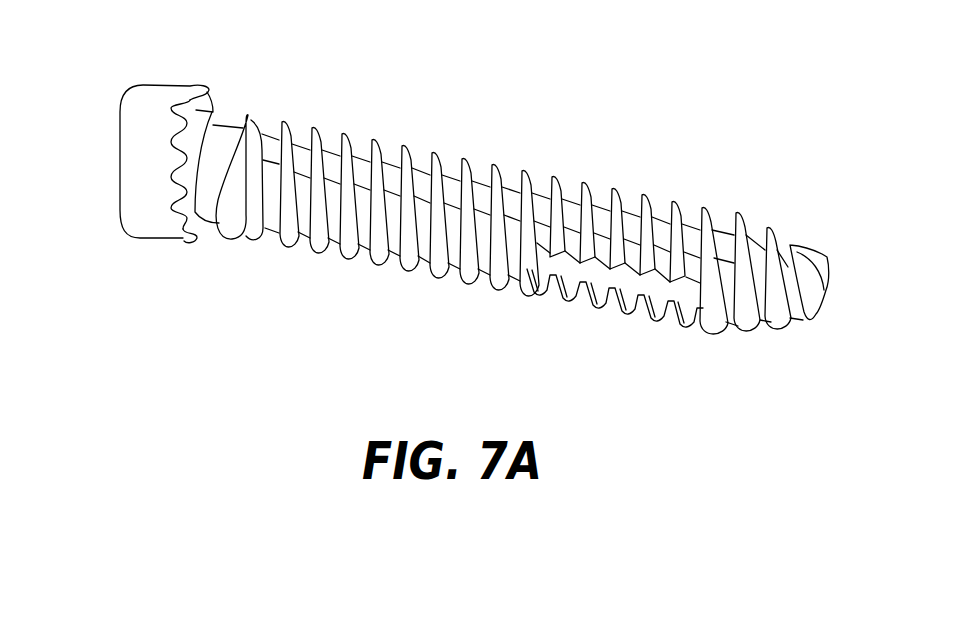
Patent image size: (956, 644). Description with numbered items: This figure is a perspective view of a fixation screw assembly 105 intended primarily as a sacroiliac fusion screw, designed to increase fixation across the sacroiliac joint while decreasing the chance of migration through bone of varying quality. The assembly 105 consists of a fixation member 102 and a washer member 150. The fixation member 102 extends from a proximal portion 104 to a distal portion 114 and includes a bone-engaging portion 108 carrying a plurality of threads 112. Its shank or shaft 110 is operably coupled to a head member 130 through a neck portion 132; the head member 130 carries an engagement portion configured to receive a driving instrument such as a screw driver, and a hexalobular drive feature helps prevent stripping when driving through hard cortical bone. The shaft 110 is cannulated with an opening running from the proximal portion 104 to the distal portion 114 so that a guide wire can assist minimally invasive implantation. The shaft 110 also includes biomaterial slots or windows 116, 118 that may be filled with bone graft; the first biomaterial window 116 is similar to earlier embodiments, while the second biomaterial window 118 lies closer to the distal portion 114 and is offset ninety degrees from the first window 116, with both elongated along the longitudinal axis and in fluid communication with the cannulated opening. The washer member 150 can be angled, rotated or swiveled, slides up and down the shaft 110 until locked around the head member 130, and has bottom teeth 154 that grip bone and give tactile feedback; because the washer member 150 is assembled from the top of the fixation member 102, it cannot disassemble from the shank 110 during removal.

The fixation member 102 is at (347, 273).
The proximal portion 104 is at (95, 130).
The fixation screw assembly 105 is at (613, 62).
The bone-engaging portion 108 is at (572, 205).
The shank or shaft 110 is at (657, 222).
The threads 112 is at (418, 273).
The distal portion 114 is at (812, 322).
The first biomaterial window 116 is at (428, 168).
The second biomaterial window 118 is at (663, 300).
The head member 130 is at (201, 108).
The neck portion 132 is at (216, 123).
The washer member 150 is at (155, 102).
The teeth 154 is at (196, 246).